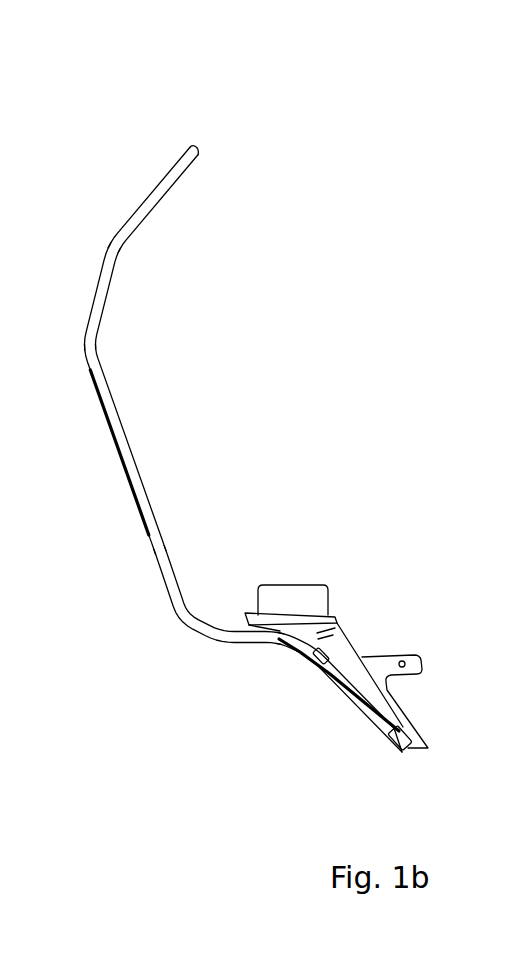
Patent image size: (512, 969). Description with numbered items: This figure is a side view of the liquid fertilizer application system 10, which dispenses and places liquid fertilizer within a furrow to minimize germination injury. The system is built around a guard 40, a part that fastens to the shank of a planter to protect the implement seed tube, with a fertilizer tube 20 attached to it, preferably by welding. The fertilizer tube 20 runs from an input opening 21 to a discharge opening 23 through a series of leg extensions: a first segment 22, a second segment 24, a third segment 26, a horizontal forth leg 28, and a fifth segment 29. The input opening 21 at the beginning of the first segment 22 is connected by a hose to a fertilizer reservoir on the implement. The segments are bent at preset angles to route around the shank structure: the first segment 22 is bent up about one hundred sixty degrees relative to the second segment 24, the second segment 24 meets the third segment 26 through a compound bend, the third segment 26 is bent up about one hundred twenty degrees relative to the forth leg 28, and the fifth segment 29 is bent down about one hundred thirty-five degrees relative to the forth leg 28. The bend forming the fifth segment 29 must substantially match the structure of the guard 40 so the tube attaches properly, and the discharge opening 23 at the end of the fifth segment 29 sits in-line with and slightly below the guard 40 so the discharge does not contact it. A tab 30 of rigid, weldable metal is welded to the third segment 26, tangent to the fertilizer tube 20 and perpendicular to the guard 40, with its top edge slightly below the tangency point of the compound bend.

The liquid fertilizer application system 10 is at (292, 250).
The fertilizer tube 20 is at (146, 470).
The input opening 21 is at (195, 150).
The first segment 22 is at (147, 203).
The discharge opening 23 is at (403, 752).
The second segment 24 is at (107, 278).
The third segment 26 is at (150, 531).
The forth leg 28 is at (243, 637).
The fifth segment 29 is at (337, 683).
The tab 30 is at (95, 387).
The guard 40 is at (352, 626).